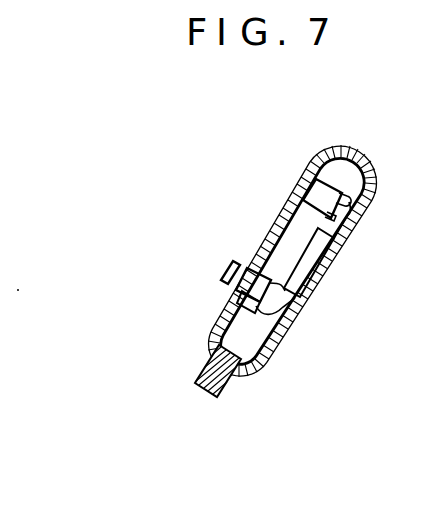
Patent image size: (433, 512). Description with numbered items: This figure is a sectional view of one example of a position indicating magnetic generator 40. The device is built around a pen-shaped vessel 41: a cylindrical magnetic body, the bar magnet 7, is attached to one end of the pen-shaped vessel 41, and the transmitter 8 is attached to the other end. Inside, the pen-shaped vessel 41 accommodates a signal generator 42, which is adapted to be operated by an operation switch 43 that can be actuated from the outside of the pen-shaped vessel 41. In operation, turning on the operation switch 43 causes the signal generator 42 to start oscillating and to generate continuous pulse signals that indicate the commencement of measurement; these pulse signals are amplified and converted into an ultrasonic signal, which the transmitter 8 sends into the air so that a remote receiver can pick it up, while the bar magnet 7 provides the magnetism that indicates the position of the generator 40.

The bar magnet 7 is at (204, 396).
The transmitter 8 is at (303, 183).
The position indicating magnetic generator 40 is at (381, 178).
The pen-shaped vessel 41 is at (355, 147).
The signal generator 42 is at (313, 265).
The operation switch 43 is at (230, 264).